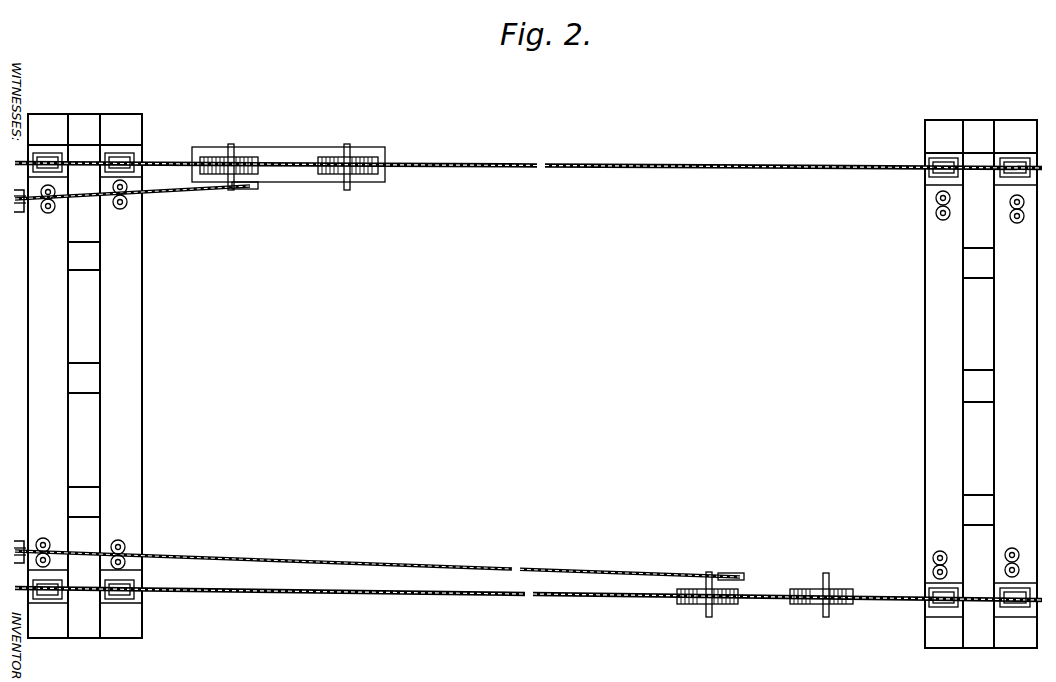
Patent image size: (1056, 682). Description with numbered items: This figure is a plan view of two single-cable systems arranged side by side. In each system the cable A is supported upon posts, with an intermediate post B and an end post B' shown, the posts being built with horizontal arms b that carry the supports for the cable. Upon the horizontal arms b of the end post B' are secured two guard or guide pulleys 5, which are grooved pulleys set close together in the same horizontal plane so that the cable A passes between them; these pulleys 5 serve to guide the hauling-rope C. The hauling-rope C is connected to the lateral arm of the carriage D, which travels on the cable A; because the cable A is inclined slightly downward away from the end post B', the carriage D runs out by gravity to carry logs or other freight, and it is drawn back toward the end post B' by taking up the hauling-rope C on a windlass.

The guard or guide pulleys 5 is at (48, 213).
The cable A is at (528, 384).
The post B is at (981, 384).
The end post B' is at (85, 376).
The horizontal arms b is at (515, 433).
The hauling-rope C is at (379, 381).
The carriage D is at (352, 162).